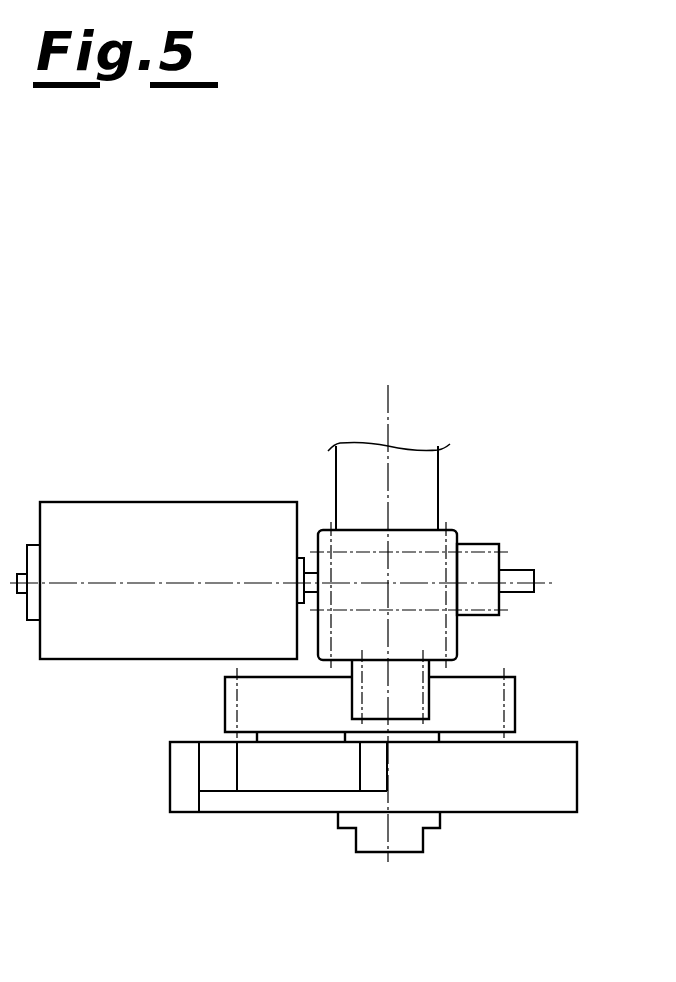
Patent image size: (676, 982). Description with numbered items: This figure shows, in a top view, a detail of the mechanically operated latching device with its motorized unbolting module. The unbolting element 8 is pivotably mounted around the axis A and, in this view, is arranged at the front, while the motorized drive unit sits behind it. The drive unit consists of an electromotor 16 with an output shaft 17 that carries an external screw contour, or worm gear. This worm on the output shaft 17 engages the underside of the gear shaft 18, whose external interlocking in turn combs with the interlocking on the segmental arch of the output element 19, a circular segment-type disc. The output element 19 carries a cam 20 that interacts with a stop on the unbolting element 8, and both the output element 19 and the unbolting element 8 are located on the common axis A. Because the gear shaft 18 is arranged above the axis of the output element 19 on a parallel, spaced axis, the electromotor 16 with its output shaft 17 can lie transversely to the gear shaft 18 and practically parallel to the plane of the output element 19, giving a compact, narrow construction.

The unbolting element 8 is at (518, 798).
The electromotor 16 is at (156, 520).
The output shaft 17 is at (480, 557).
The gear shaft 18 is at (452, 645).
The output element 19 is at (495, 703).
The cam 20 is at (287, 738).
The axis A is at (392, 838).